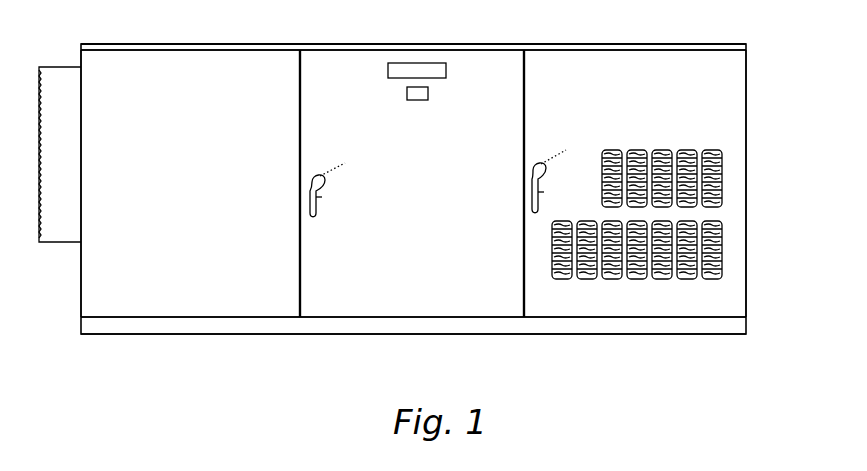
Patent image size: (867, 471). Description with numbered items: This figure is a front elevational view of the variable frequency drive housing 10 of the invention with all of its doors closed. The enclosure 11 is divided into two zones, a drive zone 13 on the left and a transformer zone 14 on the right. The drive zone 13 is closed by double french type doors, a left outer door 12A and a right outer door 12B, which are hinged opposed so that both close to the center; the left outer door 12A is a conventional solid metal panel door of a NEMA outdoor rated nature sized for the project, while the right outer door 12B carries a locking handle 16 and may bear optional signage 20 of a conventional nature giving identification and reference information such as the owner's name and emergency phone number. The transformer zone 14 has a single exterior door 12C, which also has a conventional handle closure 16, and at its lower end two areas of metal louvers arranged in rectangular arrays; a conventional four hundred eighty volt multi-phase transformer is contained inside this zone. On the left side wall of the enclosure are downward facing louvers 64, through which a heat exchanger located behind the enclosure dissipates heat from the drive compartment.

The housing / apparatus 10 is at (648, 347).
The enclosure 11 is at (248, 334).
The left outer door 12A is at (195, 272).
The right outer door 12B is at (421, 275).
The exterior door 12C is at (668, 116).
The drive zone 13 is at (352, 38).
The transformer zone 14 is at (578, 36).
The handle closure 16 is at (324, 199).
The signage 20 is at (448, 83).
The louvers 64 is at (72, 227).